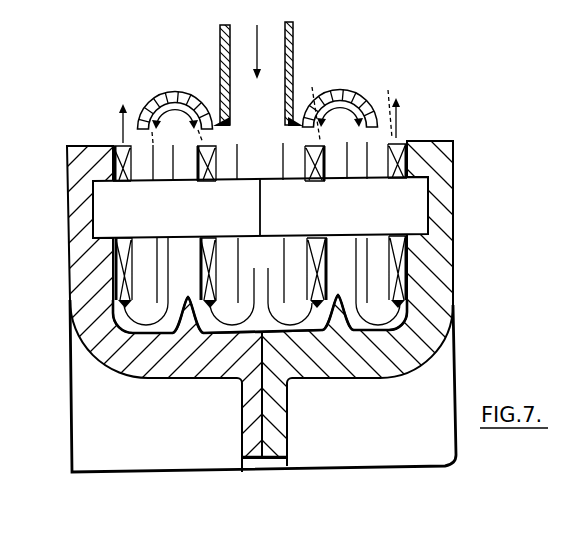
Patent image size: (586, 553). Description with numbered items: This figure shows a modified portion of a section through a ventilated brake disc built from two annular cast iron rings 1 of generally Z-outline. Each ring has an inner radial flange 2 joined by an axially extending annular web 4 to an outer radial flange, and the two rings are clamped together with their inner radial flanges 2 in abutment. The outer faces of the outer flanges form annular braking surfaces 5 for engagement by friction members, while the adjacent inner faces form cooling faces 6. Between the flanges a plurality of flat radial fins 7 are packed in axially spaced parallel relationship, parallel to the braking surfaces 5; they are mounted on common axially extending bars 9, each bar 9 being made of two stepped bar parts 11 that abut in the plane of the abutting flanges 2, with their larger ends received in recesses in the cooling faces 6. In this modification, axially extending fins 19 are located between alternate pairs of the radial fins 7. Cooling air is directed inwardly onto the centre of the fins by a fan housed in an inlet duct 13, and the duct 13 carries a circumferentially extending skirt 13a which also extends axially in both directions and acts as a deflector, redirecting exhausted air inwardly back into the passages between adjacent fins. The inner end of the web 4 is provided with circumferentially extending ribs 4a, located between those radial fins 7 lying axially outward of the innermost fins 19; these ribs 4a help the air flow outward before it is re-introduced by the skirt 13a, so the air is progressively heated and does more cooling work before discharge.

The annular cast iron ring 1 is at (421, 341).
The inner radial flange 2 is at (276, 419).
The axially extending annular web 4 is at (200, 352).
The circumferentially extending rib 4a is at (391, 417).
The annular braking surface 5 is at (453, 267).
The cooling face 6 is at (117, 282).
The radial fin 7 is at (281, 297).
The axially extending bar 9 is at (279, 188).
The bar part 11 is at (115, 205).
The duct 13 is at (293, 46).
The circumferentially extending skirt 13a is at (352, 88).
The axially extending fin 19 is at (122, 143).